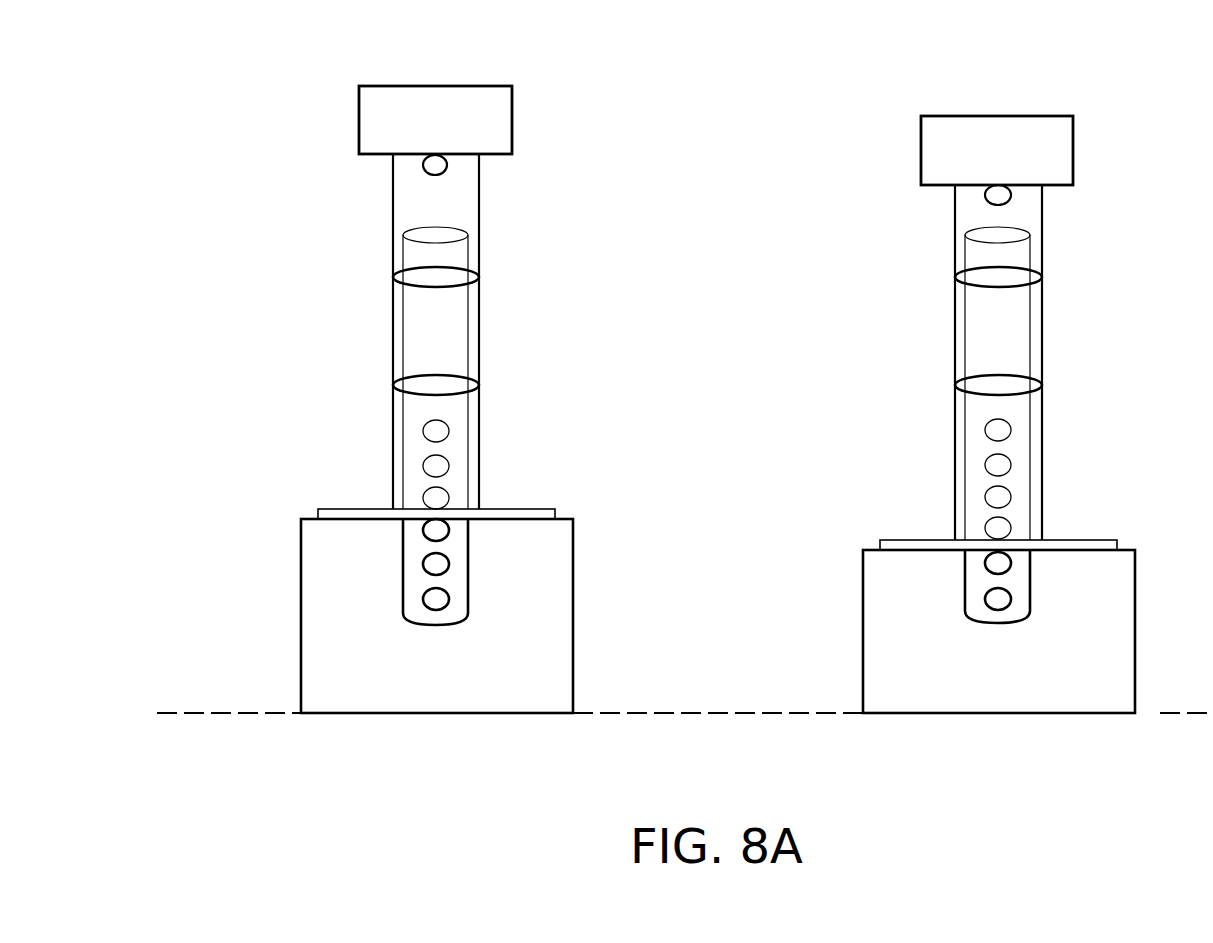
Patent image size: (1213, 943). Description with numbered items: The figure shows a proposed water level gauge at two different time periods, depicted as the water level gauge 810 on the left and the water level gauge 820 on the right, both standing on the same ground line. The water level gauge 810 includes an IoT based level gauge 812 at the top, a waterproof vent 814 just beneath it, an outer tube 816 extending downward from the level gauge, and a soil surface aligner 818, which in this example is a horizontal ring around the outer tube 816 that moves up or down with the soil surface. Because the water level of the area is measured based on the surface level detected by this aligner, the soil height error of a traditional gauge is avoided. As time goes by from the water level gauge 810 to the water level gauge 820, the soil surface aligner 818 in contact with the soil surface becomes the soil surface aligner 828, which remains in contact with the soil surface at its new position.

The water level gauge 810 is at (282, 93).
The IoT based level gauge 812 is at (513, 120).
The waterproof vent 814 is at (448, 167).
The outer tube 816 is at (480, 215).
The soil surface aligner 818 is at (513, 508).
The water level gauge 820 is at (845, 93).
The soil surface aligner 828 is at (920, 538).